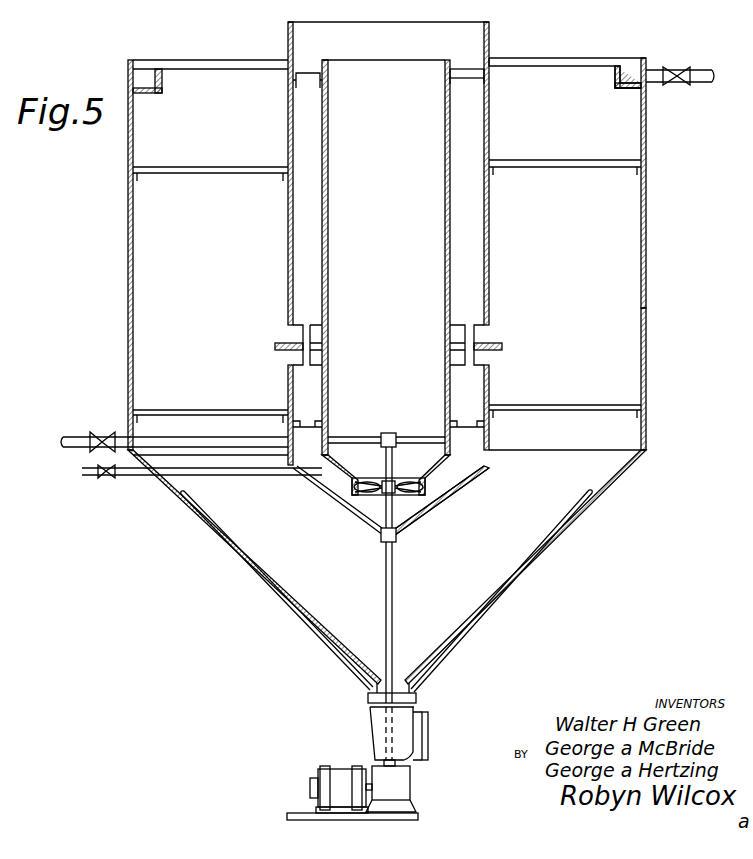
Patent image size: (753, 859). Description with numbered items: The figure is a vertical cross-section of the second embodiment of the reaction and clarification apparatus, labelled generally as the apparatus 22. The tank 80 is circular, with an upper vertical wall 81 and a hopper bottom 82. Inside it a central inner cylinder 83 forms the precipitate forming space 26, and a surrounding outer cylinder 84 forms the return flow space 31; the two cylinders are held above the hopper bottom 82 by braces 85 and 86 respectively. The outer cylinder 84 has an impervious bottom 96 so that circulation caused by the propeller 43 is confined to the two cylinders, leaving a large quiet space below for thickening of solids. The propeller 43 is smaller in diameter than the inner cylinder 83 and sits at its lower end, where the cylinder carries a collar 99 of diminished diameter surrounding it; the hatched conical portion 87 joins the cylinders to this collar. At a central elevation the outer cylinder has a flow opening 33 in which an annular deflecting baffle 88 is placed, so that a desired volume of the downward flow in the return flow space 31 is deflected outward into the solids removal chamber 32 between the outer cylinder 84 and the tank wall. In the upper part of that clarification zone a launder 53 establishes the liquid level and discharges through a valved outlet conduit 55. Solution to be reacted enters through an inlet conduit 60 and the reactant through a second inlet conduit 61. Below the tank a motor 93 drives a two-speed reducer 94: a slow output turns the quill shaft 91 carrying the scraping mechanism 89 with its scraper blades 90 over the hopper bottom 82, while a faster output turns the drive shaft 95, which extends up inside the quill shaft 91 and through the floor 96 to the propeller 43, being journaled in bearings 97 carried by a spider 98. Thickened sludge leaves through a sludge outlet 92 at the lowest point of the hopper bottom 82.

The apparatus 22 is at (103, 0).
The precipitate forming space 26 is at (343, 75).
The braces 85 is at (465, 66).
The solids removal chamber 32 is at (537, 75).
The launder 53 is at (626, 72).
The valved outlet conduit 55 is at (654, 73).
The tank 80 is at (647, 138).
The central inner cylinder 83 is at (445, 106).
The return flow space 31 is at (474, 108).
The braces 86 is at (553, 168).
The outer cylinder 84 is at (490, 250).
The flow opening 33 is at (487, 327).
The upper vertical wall 81 is at (647, 313).
The annular deflecting baffle 88 is at (275, 345).
The inlet conduit 60 is at (121, 437).
The second inlet conduit 61 is at (131, 476).
The bearings 97 is at (384, 433).
The spider 98 is at (413, 437).
The conical bottom 87 is at (464, 491).
The hopper bottom 82 is at (619, 488).
The impervious bottom 96 is at (336, 508).
The propeller 43 is at (413, 496).
The collar 99 is at (431, 496).
The drive shaft 95 is at (393, 578).
The scraping mechanism 89 is at (398, 690).
The scraper blades 90 is at (469, 656).
The sludge outlet 92 is at (418, 728).
The quill shaft 91 is at (379, 762).
The motor 93 is at (328, 769).
The reducer 94 is at (406, 783).